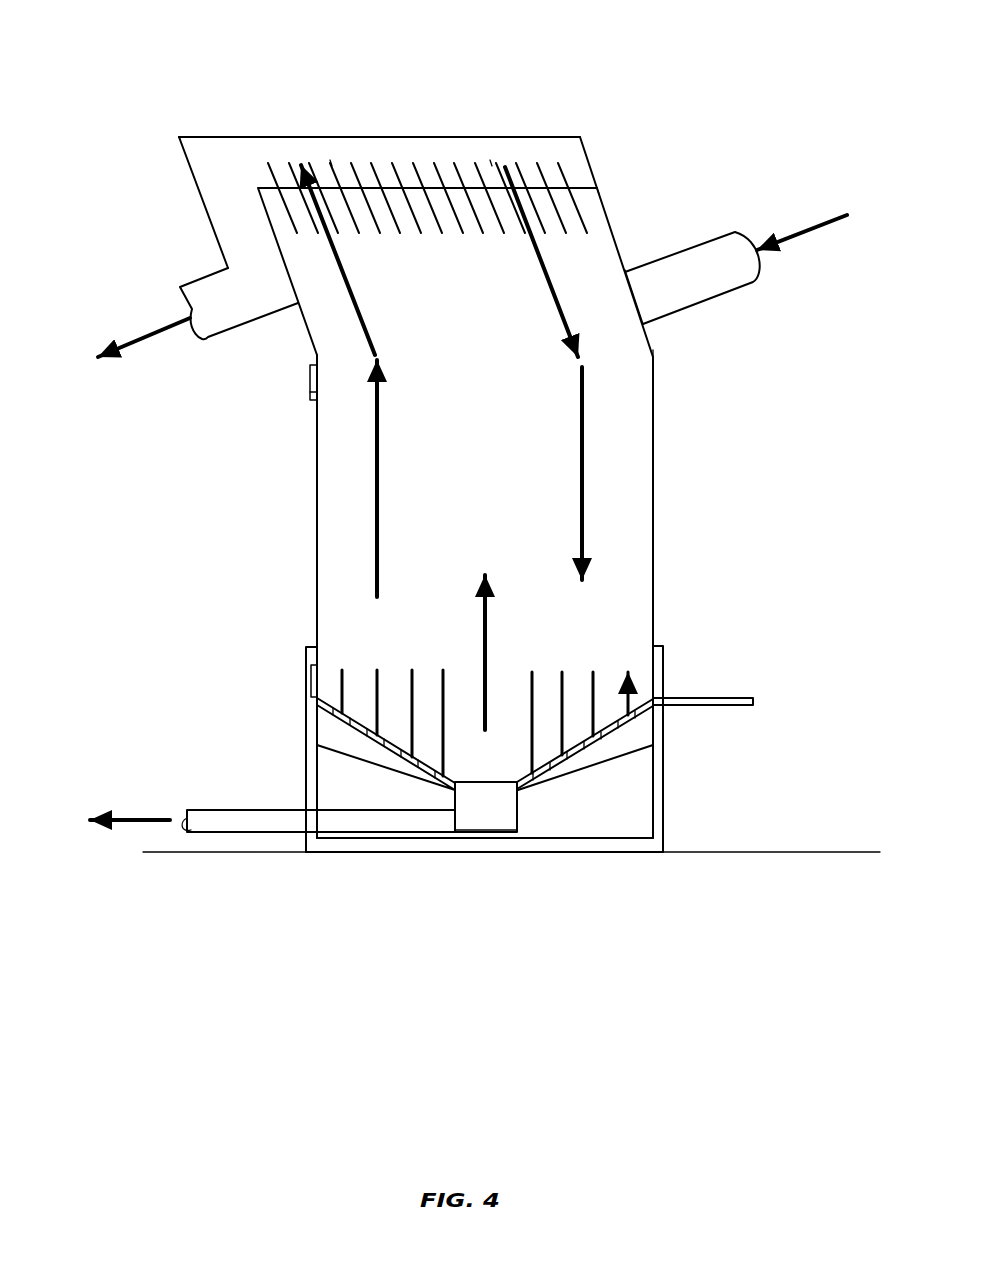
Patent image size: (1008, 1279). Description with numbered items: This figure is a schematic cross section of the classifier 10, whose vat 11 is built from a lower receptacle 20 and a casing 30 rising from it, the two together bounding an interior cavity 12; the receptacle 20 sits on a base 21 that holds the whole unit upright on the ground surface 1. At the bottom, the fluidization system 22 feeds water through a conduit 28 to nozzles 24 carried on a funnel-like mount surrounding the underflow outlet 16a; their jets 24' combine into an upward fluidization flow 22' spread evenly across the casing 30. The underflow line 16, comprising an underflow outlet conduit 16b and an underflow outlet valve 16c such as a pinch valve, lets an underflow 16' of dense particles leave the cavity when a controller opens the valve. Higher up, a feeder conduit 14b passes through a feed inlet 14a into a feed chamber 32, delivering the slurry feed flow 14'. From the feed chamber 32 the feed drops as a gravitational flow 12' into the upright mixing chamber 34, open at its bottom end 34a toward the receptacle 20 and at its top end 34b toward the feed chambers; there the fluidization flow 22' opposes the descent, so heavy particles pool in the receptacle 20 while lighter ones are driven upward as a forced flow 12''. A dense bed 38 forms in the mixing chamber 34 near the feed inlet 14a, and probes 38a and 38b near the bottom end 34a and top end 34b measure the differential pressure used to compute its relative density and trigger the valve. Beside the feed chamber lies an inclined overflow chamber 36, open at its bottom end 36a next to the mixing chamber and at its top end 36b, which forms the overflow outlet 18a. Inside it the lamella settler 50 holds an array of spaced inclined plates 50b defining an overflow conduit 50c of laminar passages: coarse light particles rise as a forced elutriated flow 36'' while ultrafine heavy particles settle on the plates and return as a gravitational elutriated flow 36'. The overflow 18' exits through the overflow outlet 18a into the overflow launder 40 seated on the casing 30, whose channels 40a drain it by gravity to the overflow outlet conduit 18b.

The ground surface 1 is at (830, 852).
The classifier 10 is at (87, 67).
The vat 11 is at (612, 222).
The interior cavity 12 is at (677, 490).
The gravitational flow 12' is at (614, 473).
The forced flow 12'' is at (415, 478).
The feed inlet 14a is at (625, 272).
The feeder conduit 14b is at (703, 243).
The feed flow 14' is at (812, 200).
The underflow line 16 is at (493, 880).
The underflow outlet 16a is at (518, 790).
The underflow outlet conduit 16b is at (253, 823).
The underflow outlet valve 16c is at (463, 800).
The underflow 16' is at (130, 856).
The overflow outlet 18a is at (258, 187).
The overflow outlet conduit 18b is at (190, 283).
The overflow 18' is at (128, 328).
The receptacle 20 is at (353, 760).
The base 21 is at (667, 828).
The fluidization system 22 is at (563, 695).
The fluidization flow 22' is at (541, 652).
The nozzle 24 is at (523, 746).
The jet 24' is at (611, 704).
The conduit 28 is at (737, 708).
The casing 30 is at (653, 498).
The feed chamber 32 is at (797, 290).
The mixing chamber 34 is at (473, 519).
The bottom end of mixing chamber 34a is at (317, 700).
The top end of mixing chamber 34b is at (313, 357).
The overflow chamber 36 is at (475, 276).
The bottom end of overflow chamber 36a is at (657, 357).
The top end of overflow chamber 36b is at (597, 170).
The gravitational elutriated flow 36' is at (531, 262).
The forced elutriated flow 36'' is at (367, 260).
The bed 38 is at (475, 393).
The probe 38a is at (312, 695).
The probe 38b is at (308, 383).
The overflow launder 40 is at (130, 180).
The channel 40a is at (557, 150).
The lamella settler 50 is at (430, 145).
The plate 50b is at (330, 163).
The overflow conduit 50c is at (490, 162).